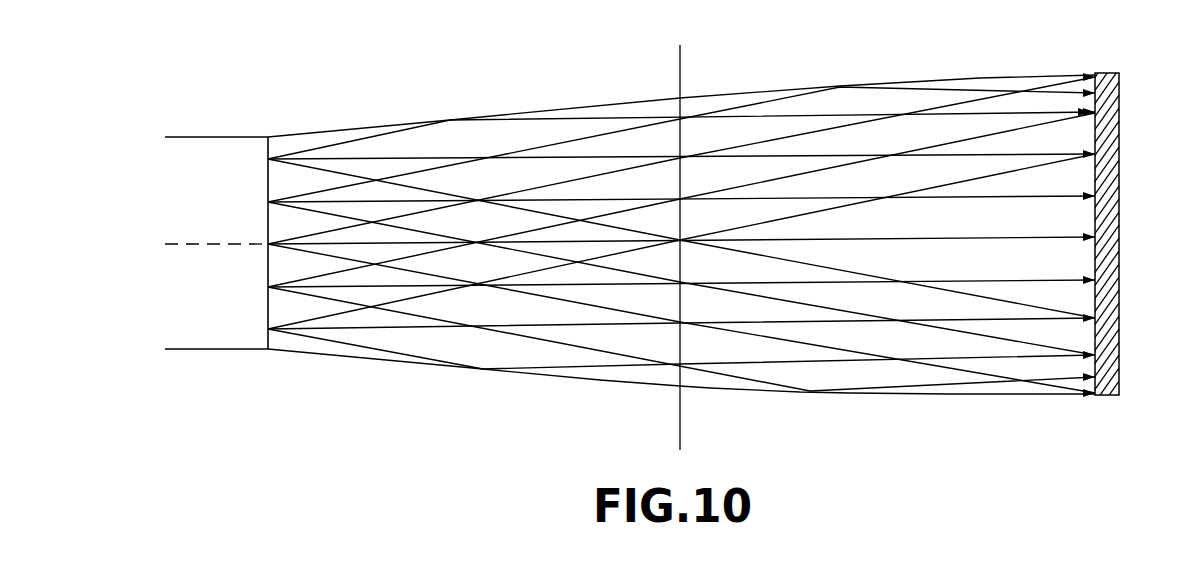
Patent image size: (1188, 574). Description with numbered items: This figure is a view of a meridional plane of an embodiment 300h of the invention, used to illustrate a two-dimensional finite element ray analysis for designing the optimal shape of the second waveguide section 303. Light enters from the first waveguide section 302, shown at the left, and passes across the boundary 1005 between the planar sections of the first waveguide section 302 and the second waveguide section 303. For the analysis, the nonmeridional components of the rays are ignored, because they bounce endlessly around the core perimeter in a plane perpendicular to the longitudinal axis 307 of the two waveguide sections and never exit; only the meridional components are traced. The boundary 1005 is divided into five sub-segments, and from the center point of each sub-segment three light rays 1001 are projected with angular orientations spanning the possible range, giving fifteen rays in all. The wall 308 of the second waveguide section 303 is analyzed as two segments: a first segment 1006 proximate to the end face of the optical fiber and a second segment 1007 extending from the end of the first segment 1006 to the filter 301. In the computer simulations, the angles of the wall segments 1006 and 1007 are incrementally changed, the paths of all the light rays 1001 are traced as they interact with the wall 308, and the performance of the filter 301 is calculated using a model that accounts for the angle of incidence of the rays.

The first waveguide section 302 is at (204, 158).
The longitudinal axis 307 is at (161, 244).
The boundary 1005 is at (268, 276).
The light ray 1001 is at (342, 343).
The second waveguide section 303 is at (479, 132).
The wall 308 is at (593, 107).
The first wall segment 1006 is at (613, 382).
The second wall segment 1007 is at (757, 390).
The embodiment 300h is at (942, 395).
The filter 301 is at (1101, 397).